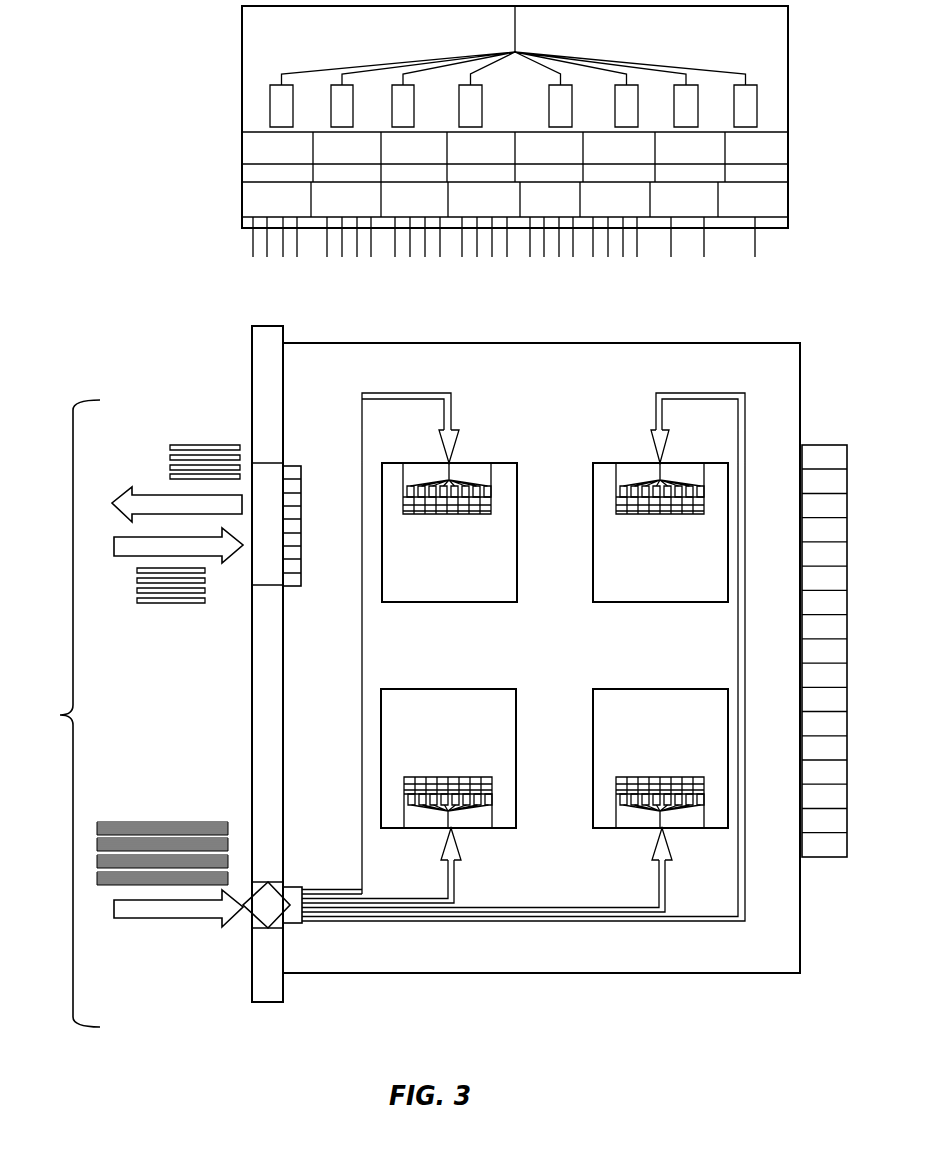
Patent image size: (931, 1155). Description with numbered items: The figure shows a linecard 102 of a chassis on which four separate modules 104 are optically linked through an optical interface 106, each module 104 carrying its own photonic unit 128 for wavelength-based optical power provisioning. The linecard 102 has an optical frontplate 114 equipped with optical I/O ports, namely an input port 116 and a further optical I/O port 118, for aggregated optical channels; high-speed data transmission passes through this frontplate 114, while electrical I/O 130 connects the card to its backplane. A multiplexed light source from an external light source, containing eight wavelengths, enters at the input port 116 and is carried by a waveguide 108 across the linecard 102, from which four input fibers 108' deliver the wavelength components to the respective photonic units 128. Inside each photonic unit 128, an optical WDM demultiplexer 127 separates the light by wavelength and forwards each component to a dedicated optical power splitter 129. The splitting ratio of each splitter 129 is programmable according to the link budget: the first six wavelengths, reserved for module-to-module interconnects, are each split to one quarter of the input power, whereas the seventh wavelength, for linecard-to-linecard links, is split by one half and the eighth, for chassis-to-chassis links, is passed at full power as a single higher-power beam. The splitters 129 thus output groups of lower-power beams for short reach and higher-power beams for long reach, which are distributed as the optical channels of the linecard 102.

The linecard 102 is at (777, 343).
The module 104 is at (554, 645).
The optical interface 106 is at (133, 713).
The waveguide 108 is at (332, 962).
The input fiber 108' is at (557, 657).
The optical frontplate 114 is at (265, 982).
The input port 116 is at (266, 908).
The optical I/O port 118 is at (270, 470).
The optical WDM demultiplexer 127 is at (805, 5).
The photonic unit 128 is at (217, 137).
The optical power splitter 129 is at (805, 175).
The electrical I/O connector 130 is at (763, 399).